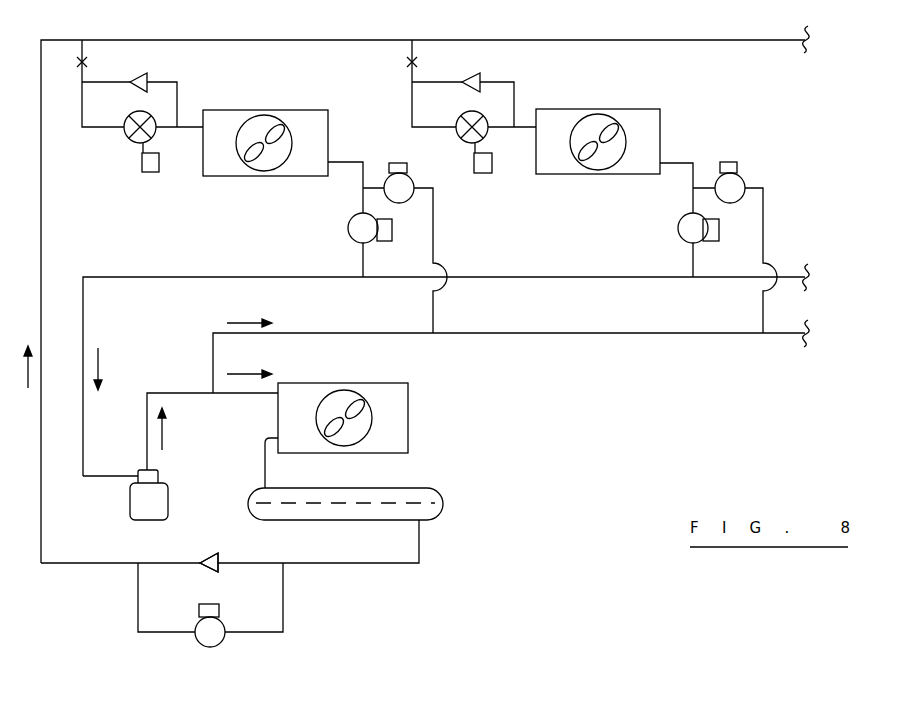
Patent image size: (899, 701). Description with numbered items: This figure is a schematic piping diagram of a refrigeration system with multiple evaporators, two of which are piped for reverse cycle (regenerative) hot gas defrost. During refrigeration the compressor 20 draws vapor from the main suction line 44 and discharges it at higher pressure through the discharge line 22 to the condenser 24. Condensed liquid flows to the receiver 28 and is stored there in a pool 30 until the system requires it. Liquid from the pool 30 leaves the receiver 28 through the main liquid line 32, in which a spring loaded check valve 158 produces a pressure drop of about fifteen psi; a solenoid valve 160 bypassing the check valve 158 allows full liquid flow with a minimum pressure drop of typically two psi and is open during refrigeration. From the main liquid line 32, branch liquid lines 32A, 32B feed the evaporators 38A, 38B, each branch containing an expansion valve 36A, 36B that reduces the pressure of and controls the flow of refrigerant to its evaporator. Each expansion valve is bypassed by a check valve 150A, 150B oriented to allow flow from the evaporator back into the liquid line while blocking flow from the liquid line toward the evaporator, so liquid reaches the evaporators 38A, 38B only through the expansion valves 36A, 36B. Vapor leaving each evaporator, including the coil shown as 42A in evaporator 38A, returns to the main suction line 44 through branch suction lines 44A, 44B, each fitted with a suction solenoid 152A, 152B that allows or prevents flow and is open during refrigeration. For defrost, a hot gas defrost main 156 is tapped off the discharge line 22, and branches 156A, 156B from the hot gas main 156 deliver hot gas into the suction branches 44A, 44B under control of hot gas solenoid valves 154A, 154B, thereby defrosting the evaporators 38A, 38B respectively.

The compressor 20 is at (125, 495).
The discharge line 22 is at (212, 420).
The condenser 24 is at (393, 416).
The receiver 28 is at (443, 513).
The pool 30 is at (345, 511).
The main liquid line 32 is at (402, 585).
The branch liquid line 32A is at (80, 117).
The branch liquid line 32B is at (410, 112).
The expansion valve 36A is at (125, 143).
The expansion valve 36B is at (488, 145).
The evaporator 38A is at (265, 130).
The evaporator 38B is at (598, 130).
The impeller 42A is at (257, 155).
The main suction line 44 is at (465, 365).
The branch suction line 44A is at (368, 157).
The branch suction line 44B is at (698, 153).
The check valve 150A is at (151, 72).
The check valve 150B is at (480, 70).
The suction solenoid 152A is at (345, 228).
The suction solenoid 152B is at (672, 228).
The hot gas solenoid valve 154A is at (404, 172).
The hot gas solenoid valve 154B is at (733, 171).
The hot gas defrost main 156 is at (511, 351).
The branch 156A is at (451, 260).
The branch 156B is at (778, 260).
The spring loaded check valve 158 is at (213, 551).
The solenoid valve 160 is at (210, 616).